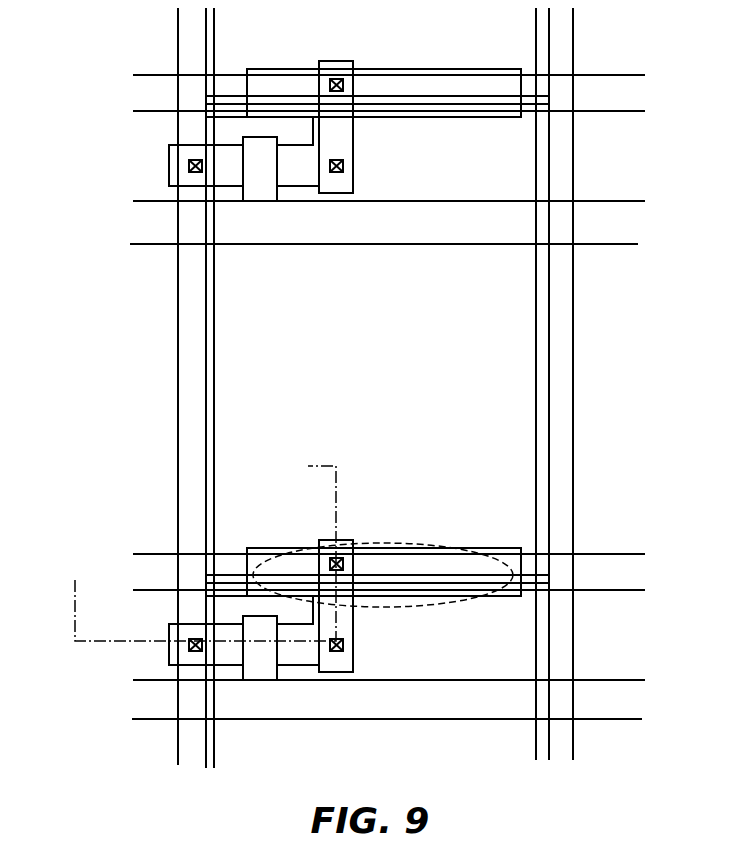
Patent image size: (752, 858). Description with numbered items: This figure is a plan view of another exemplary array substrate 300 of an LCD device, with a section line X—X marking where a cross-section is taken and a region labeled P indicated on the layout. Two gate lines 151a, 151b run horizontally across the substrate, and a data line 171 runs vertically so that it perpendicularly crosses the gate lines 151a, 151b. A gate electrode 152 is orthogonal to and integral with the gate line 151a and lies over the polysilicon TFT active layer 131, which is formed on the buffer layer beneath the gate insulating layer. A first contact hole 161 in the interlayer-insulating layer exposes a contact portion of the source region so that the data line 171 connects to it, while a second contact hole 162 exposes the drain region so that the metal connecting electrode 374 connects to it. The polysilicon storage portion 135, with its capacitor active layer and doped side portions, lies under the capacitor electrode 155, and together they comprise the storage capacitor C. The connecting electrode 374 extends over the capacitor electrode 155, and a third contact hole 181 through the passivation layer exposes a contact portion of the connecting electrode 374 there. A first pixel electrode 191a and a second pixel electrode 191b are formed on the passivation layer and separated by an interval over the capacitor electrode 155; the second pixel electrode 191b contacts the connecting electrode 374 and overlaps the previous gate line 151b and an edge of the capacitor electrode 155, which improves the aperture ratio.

The array substrate 300 is at (116, 332).
The data line 171 is at (177, 398).
The first pixel electrode 191a is at (549, 652).
The second pixel electrode 191b is at (549, 383).
The gate line 151a is at (422, 720).
The gate line 151b is at (407, 245).
The gate electrode 152 is at (263, 137).
The TFT active layer 131 is at (263, 665).
The first contact hole 161 is at (184, 657).
The second contact hole 162 is at (356, 645).
The third contact hole 181 is at (341, 551).
The connecting electrode 374 is at (353, 612).
The capacitor electrode 155 is at (425, 553).
The storage portion 135 is at (483, 550).
The storage capacitor C is at (385, 542).
The line X— X is at (190, 542).
The pixel P is at (525, 298).